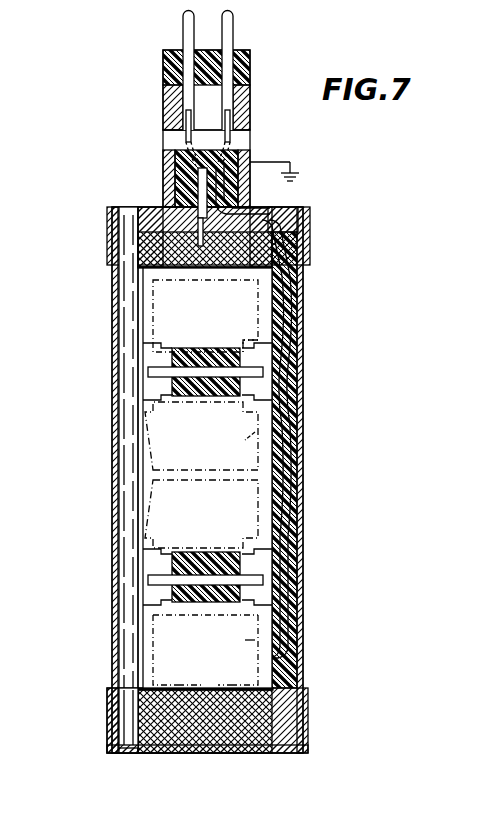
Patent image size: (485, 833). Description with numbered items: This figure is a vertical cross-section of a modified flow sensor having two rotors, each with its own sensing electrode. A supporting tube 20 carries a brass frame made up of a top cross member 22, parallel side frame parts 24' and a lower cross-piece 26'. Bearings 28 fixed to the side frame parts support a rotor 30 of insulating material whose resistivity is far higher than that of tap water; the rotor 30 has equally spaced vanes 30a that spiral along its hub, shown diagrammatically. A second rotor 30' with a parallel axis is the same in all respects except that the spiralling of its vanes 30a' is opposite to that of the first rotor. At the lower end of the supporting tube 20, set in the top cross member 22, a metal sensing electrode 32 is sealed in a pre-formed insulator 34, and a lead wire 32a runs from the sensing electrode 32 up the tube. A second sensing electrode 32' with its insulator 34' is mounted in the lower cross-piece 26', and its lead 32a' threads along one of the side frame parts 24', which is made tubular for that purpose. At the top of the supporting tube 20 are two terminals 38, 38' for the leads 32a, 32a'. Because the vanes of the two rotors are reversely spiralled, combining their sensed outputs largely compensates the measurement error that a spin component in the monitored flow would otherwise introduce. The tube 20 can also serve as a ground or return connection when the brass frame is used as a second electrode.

The supporting tube 20 is at (250, 110).
The top cross member 22 is at (107, 250).
The side frame parts 24' is at (294, 447).
The lower cross-piece 26' is at (178, 720).
The bearings 28 is at (139, 397).
The rotor 30 is at (158, 438).
The second rotor 30' is at (158, 514).
The vanes 30a is at (300, 426).
The vanes 30a' is at (303, 640).
The sensing electrode 32 is at (205, 310).
The sensing electrode 32' is at (205, 652).
The lead wire 32a is at (159, 194).
The lead 32a' is at (262, 172).
The insulator 34 is at (237, 310).
The insulator 34' is at (170, 651).
The terminal 38 is at (160, 77).
The terminal 38' is at (249, 77).